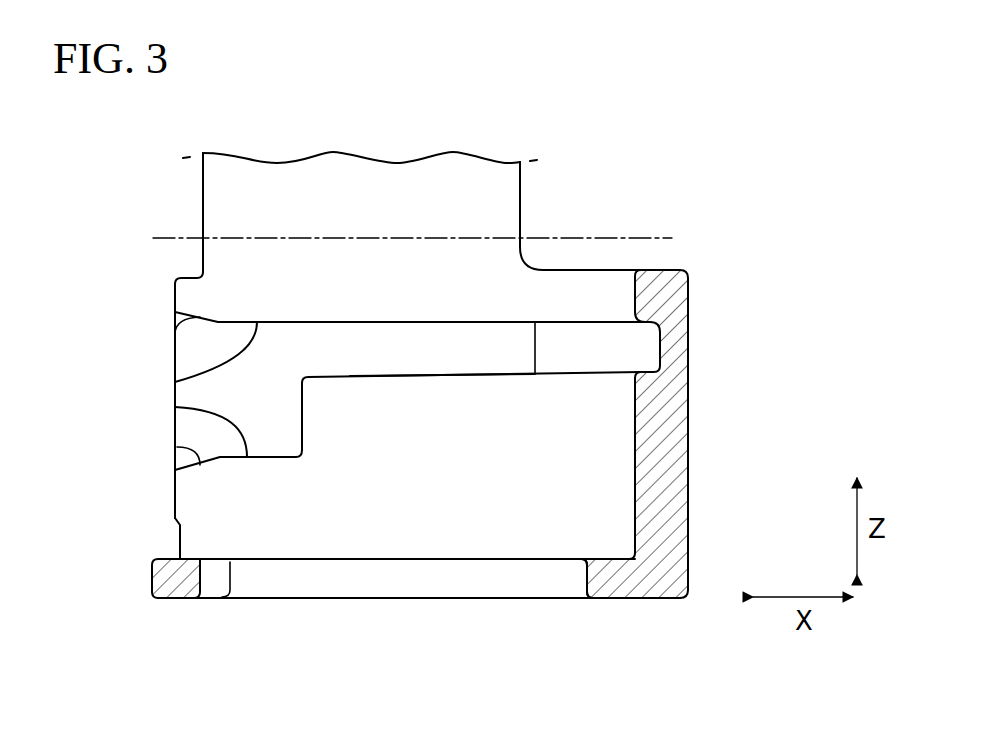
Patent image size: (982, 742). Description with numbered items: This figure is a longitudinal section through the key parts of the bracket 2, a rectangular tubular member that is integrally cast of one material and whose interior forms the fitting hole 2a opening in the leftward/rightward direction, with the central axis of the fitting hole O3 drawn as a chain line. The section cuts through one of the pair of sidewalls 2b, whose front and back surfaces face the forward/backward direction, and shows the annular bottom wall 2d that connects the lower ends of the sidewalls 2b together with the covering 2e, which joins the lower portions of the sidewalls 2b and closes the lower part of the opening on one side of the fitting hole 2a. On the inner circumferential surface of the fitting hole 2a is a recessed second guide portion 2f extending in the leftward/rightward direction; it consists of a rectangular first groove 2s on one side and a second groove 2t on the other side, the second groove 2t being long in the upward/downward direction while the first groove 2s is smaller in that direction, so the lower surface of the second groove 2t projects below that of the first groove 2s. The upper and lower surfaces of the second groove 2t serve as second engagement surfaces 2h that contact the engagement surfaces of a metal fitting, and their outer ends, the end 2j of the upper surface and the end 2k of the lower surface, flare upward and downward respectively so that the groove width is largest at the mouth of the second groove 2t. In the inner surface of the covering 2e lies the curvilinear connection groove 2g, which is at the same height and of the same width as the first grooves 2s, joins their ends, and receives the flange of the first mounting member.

The bracket 2 is at (679, 265).
The fitting hole 2a is at (166, 262).
The sidewall 2b is at (496, 200).
The bottom wall 2d is at (612, 585).
The covering 2e is at (665, 455).
The second guide portion 2f is at (437, 660).
The connection groove 2g is at (655, 345).
The second engagement surface 2h is at (175, 407).
The end of the upper surface of the second groove 2j is at (175, 333).
The end of the lower surface of the second groove 2k is at (177, 447).
The first groove 2s is at (413, 355).
The second groove 2t is at (270, 414).
The central axis of the fitting hole O3 is at (160, 238).